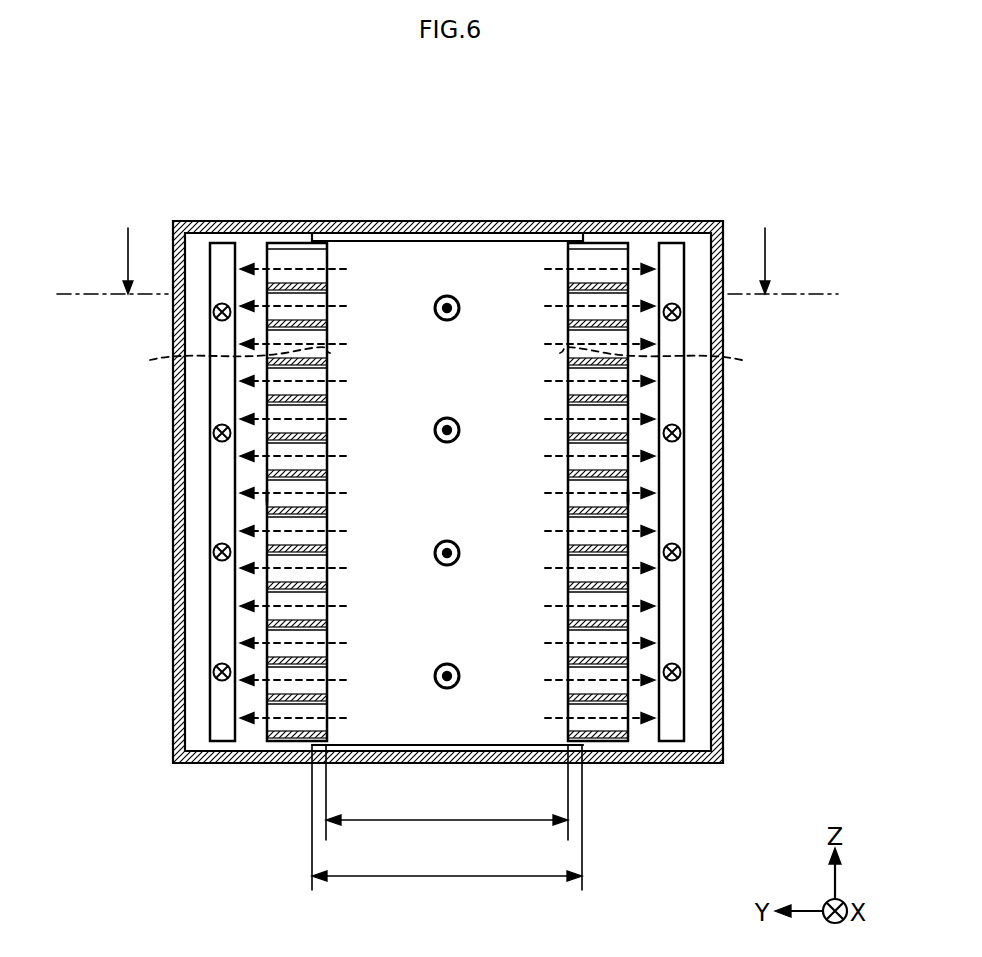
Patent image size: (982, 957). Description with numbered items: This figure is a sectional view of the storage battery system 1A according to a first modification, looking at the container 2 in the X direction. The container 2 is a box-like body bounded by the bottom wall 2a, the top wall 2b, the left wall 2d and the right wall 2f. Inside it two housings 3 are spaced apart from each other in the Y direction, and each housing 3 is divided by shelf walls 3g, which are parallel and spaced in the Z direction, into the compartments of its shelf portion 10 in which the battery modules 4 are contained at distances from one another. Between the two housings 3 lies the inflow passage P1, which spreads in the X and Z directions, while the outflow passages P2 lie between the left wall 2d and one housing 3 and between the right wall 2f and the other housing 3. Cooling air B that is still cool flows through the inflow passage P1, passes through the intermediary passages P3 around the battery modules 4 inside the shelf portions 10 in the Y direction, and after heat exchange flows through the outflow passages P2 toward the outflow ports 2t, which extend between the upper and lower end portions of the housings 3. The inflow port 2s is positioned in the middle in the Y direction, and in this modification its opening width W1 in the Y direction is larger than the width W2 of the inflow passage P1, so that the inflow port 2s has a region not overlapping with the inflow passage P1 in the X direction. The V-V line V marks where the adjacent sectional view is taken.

The storage battery system 1A is at (228, 128).
The container 2 is at (520, 215).
The bottom wall 2a is at (267, 763).
The top wall 2b is at (410, 222).
The left wall 2d is at (173, 600).
The right wall 2f is at (723, 411).
The inflow port 2s is at (448, 748).
The outflow port 2t is at (222, 742).
The housing 3 is at (283, 234).
The shelf wall 3g is at (268, 498).
The shelf portion 10 is at (448, 528).
The battery module 4 is at (283, 486).
The inflow passage P1 is at (531, 625).
The outflow passage P2 is at (198, 660).
The intermediary passage P3 is at (317, 246).
The cooling air B is at (447, 361).
The V-V line V is at (447, 261).
The opening width W1 is at (447, 882).
The width W2 is at (447, 826).